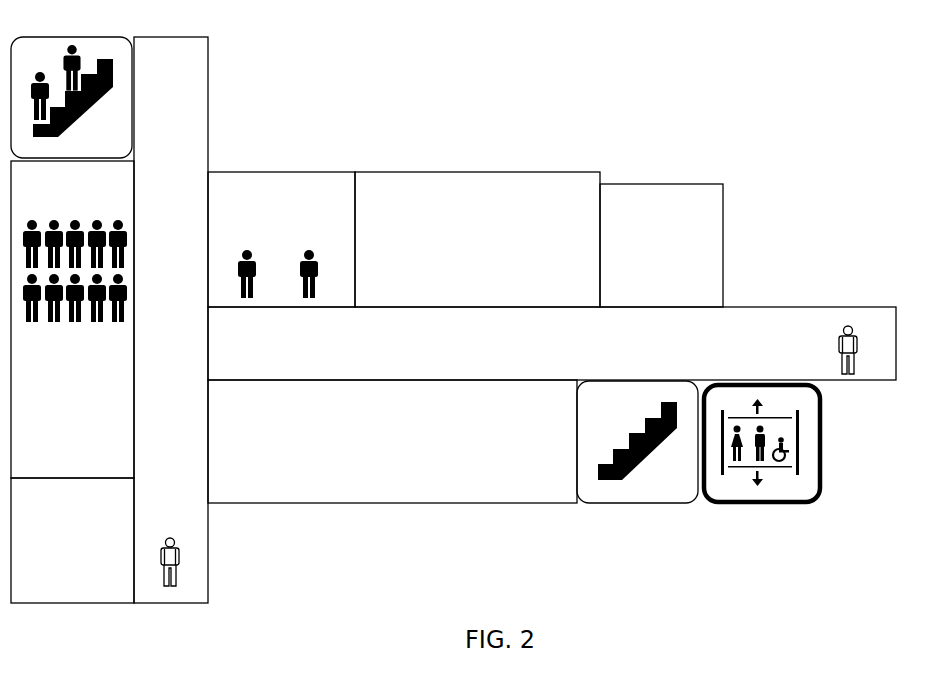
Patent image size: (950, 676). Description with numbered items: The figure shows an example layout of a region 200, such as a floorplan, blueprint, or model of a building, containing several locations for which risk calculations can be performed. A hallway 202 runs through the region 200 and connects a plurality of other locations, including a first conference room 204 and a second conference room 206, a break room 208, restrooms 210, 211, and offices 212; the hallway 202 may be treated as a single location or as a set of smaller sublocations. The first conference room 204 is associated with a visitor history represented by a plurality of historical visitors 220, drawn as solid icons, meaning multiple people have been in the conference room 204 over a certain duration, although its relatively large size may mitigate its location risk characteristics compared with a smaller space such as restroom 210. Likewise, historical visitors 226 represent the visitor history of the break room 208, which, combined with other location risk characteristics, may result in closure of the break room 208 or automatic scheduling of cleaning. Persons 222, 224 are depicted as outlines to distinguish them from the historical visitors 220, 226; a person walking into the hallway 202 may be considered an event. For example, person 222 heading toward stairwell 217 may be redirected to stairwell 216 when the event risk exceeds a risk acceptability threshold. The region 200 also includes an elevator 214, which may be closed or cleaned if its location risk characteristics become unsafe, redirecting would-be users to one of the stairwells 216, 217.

The region 200 is at (867, 48).
The hallway 202 is at (569, 330).
The first conference room 204 is at (117, 214).
The second conference room 206 is at (577, 201).
The break room 208 is at (297, 227).
The restroom 210 is at (90, 533).
The restroom 211 is at (678, 239).
The offices 212 is at (440, 409).
The elevator 214 is at (821, 477).
The stairwell 216 is at (636, 504).
The stairwell 217 is at (72, 38).
The historical visitors 220 is at (137, 222).
The person 222 is at (178, 552).
The person 224 is at (841, 335).
The historical visitors 226 is at (327, 297).